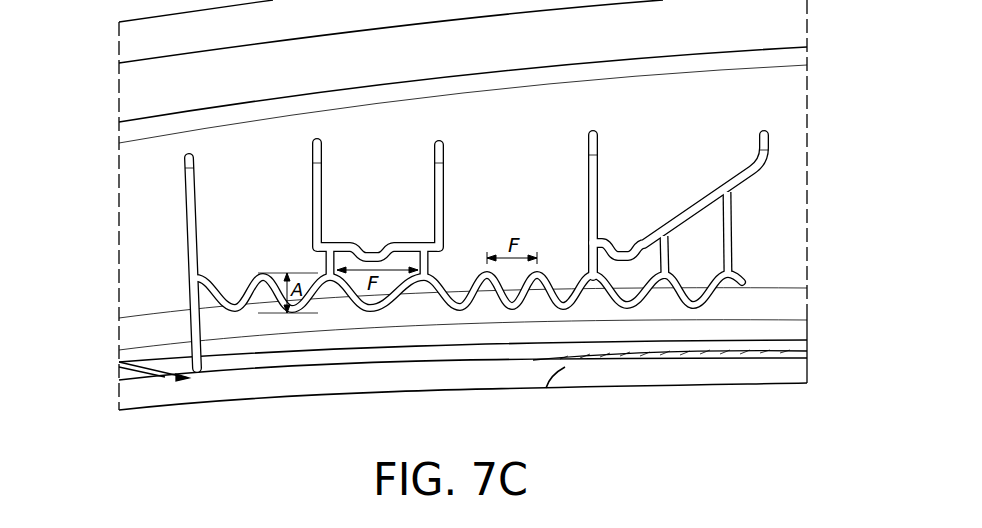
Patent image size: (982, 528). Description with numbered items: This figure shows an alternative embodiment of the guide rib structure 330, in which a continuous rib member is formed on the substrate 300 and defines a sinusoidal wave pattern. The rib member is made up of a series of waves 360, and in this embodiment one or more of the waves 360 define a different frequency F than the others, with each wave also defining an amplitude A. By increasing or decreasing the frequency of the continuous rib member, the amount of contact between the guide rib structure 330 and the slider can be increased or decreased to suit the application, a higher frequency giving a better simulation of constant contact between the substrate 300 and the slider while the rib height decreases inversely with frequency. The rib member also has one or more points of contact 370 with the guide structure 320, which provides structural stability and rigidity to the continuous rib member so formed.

The substrate 300 is at (135, 98).
The guide structure 320 is at (445, 146).
The guide rib structure 330 is at (168, 293).
The wave 360 is at (257, 312).
The point of contact 370 is at (332, 243).